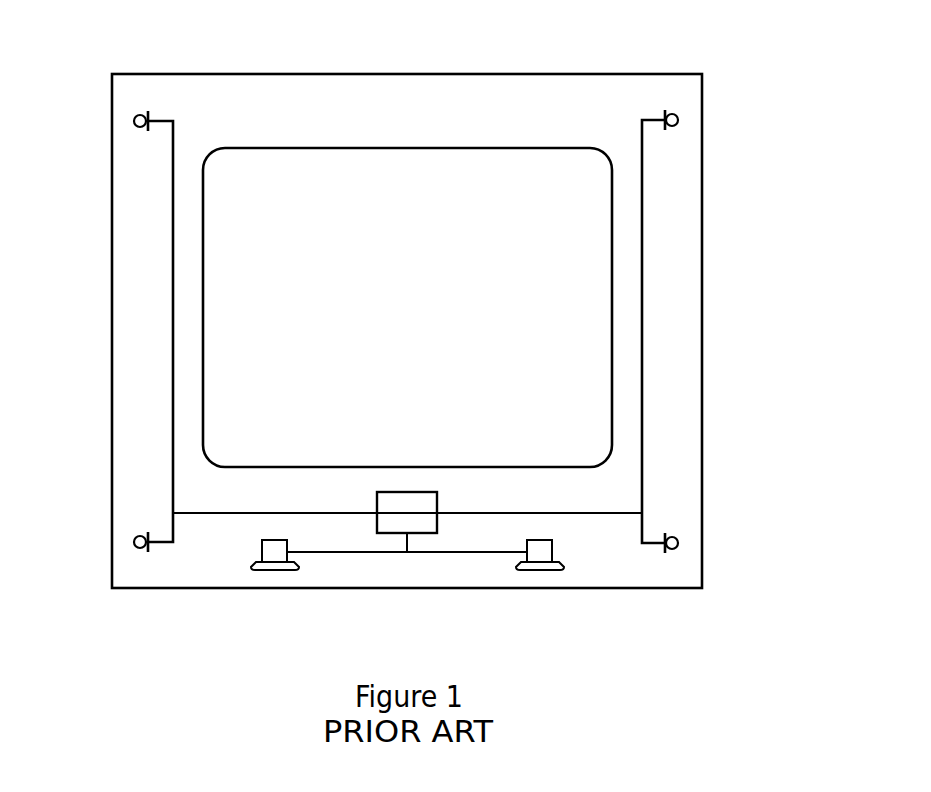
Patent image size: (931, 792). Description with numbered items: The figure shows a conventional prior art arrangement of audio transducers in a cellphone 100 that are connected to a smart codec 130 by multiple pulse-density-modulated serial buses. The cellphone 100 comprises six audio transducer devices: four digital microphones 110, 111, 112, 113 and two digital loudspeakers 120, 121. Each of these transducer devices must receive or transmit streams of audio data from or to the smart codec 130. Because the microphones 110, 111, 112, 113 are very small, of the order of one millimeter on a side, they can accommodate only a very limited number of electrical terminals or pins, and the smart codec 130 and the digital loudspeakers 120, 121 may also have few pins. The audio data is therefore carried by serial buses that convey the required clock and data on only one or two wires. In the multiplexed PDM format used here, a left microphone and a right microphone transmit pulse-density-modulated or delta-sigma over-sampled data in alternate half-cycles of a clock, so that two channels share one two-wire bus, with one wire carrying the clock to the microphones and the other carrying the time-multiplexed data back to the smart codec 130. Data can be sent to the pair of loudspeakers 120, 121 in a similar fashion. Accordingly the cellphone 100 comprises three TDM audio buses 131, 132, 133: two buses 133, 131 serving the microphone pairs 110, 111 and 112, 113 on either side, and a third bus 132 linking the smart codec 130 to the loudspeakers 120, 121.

The cellphone 100 is at (633, 73).
The digital microphone 110 is at (134, 120).
The digital microphone 111 is at (134, 541).
The digital microphone 112 is at (678, 119).
The digital microphone 113 is at (678, 541).
The digital loudspeaker 120 is at (270, 571).
The digital loudspeaker 121 is at (545, 571).
The smart codec 130 is at (390, 526).
The TDM audio bus 131 is at (703, 303).
The TDM audio bus 132 is at (432, 552).
The TDM audio bus 133 is at (173, 303).